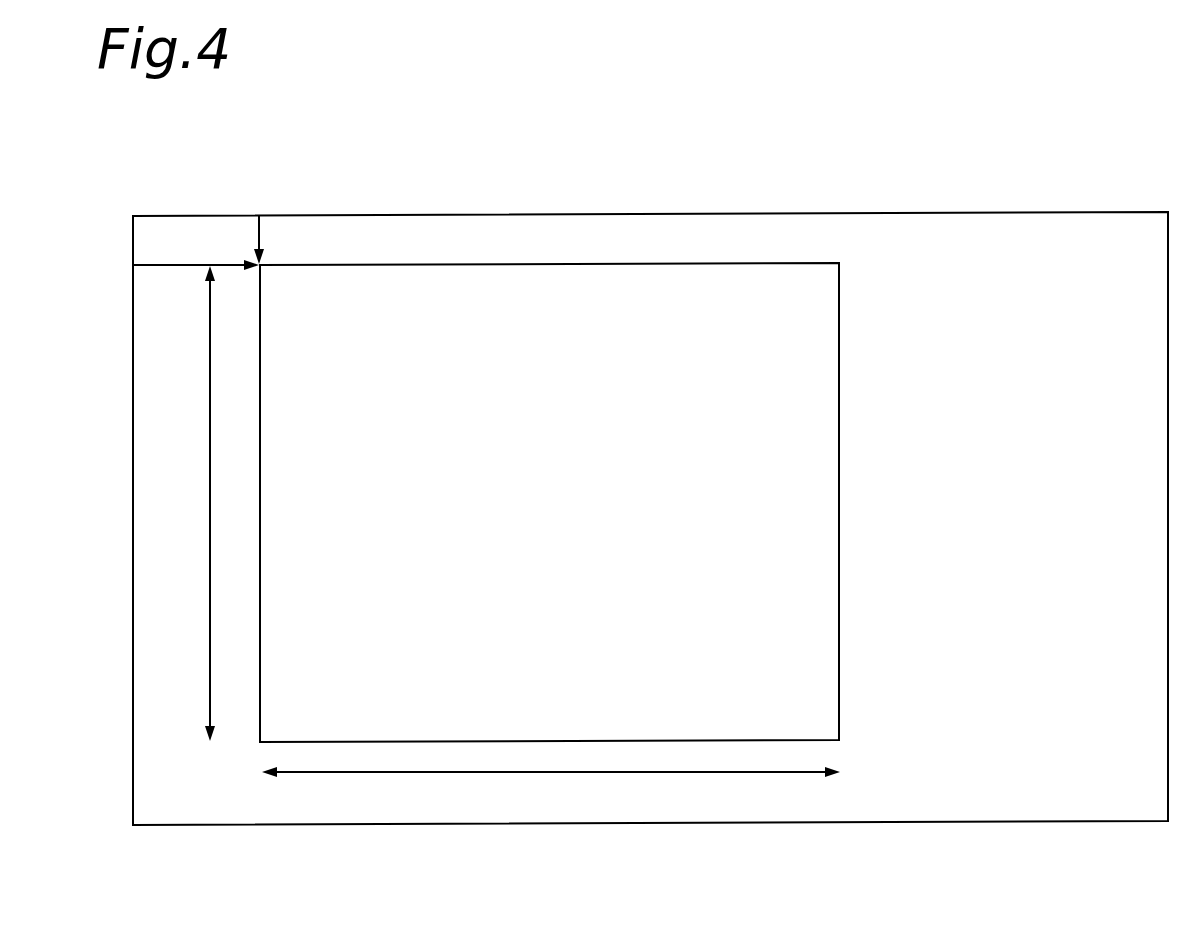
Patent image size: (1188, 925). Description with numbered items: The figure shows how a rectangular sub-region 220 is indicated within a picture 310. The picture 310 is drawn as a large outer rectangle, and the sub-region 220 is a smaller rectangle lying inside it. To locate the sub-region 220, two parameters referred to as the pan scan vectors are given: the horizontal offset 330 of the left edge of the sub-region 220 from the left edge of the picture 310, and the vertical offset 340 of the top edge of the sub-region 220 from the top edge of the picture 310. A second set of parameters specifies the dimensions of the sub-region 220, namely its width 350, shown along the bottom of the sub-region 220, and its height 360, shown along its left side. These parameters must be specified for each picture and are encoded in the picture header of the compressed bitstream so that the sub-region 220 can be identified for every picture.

The picture 310 is at (877, 212).
The sub-region 220 is at (838, 508).
The horizontal offset 330 is at (177, 265).
The vertical offset 340 is at (259, 235).
The width 350 is at (538, 772).
The height 360 is at (210, 506).